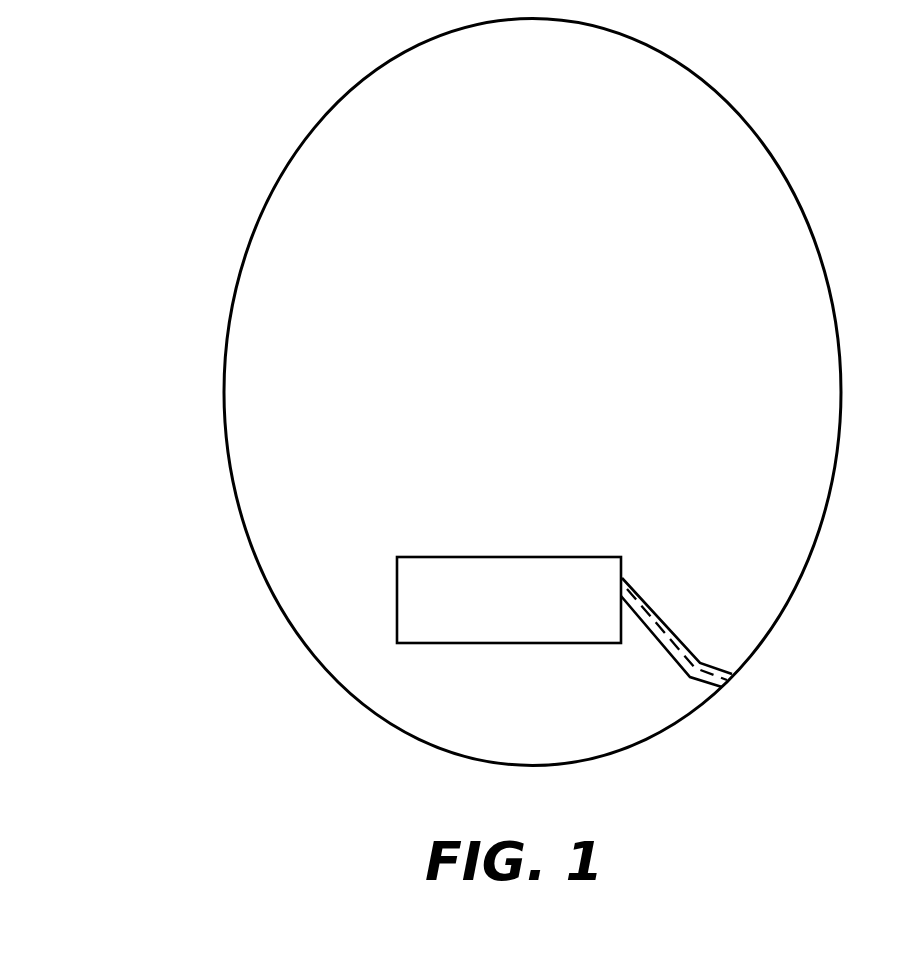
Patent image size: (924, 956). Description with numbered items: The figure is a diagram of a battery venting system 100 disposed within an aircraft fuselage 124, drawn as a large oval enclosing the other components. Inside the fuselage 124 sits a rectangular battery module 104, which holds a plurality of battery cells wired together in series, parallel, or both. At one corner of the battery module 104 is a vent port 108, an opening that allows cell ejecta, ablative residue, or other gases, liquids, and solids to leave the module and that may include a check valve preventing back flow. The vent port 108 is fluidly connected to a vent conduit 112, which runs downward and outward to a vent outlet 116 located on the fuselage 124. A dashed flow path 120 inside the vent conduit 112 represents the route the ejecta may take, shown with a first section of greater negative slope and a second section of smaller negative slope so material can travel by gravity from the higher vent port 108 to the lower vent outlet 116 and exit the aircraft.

The battery venting system 100 is at (248, 72).
The battery module 104 is at (467, 556).
The vent port 108 is at (610, 580).
The vent conduit 112 is at (655, 612).
The vent outlet 116 is at (745, 684).
The flow path 120 is at (680, 647).
The fuselage 124 is at (224, 378).